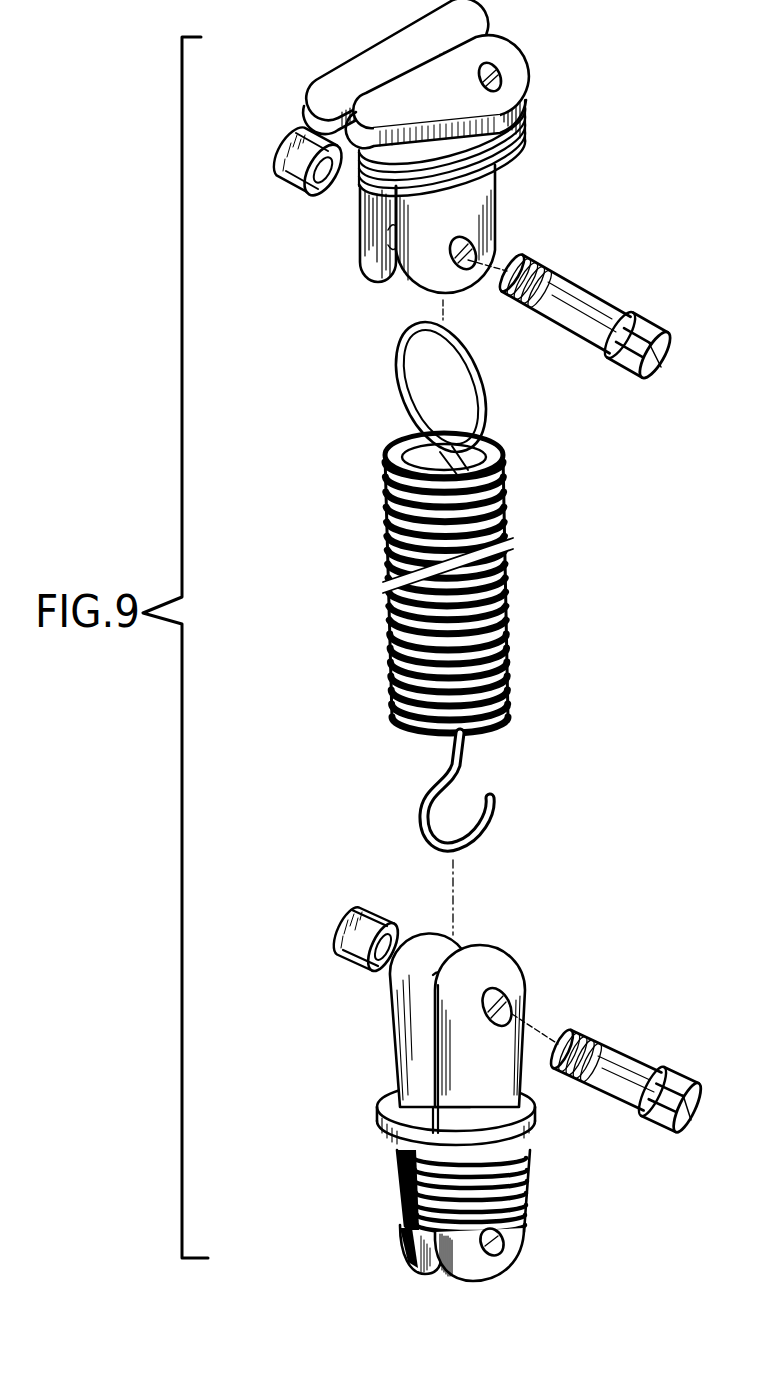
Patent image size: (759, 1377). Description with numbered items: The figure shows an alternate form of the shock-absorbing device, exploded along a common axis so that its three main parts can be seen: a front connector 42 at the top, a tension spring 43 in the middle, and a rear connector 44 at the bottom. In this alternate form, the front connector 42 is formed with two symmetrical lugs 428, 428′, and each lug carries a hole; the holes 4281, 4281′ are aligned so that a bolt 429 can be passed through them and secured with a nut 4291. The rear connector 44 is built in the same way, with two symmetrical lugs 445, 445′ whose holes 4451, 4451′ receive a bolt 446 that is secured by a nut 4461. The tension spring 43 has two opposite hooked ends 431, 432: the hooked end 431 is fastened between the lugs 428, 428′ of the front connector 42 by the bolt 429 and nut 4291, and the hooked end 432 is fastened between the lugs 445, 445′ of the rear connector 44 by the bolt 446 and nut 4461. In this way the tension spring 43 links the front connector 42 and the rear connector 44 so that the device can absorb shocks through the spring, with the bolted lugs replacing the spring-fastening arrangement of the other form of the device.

The front connector 42 is at (500, 190).
The lug 428 is at (497, 240).
The lug 428′ is at (377, 257).
The hole 4281 is at (463, 270).
The hole 4281′ is at (393, 277).
The bolt 429 is at (596, 322).
The nut 4291 is at (302, 156).
The tension spring 43 is at (518, 602).
The hooked end 431 is at (472, 385).
The hooked end 432 is at (415, 840).
The rear connector 44 is at (386, 1148).
The lug 445 is at (525, 1003).
The lug 445′ is at (412, 1017).
The hole 4451 is at (522, 985).
The hole 4451′ is at (440, 970).
The bolt 446 is at (617, 1104).
The nut 4461 is at (335, 932).